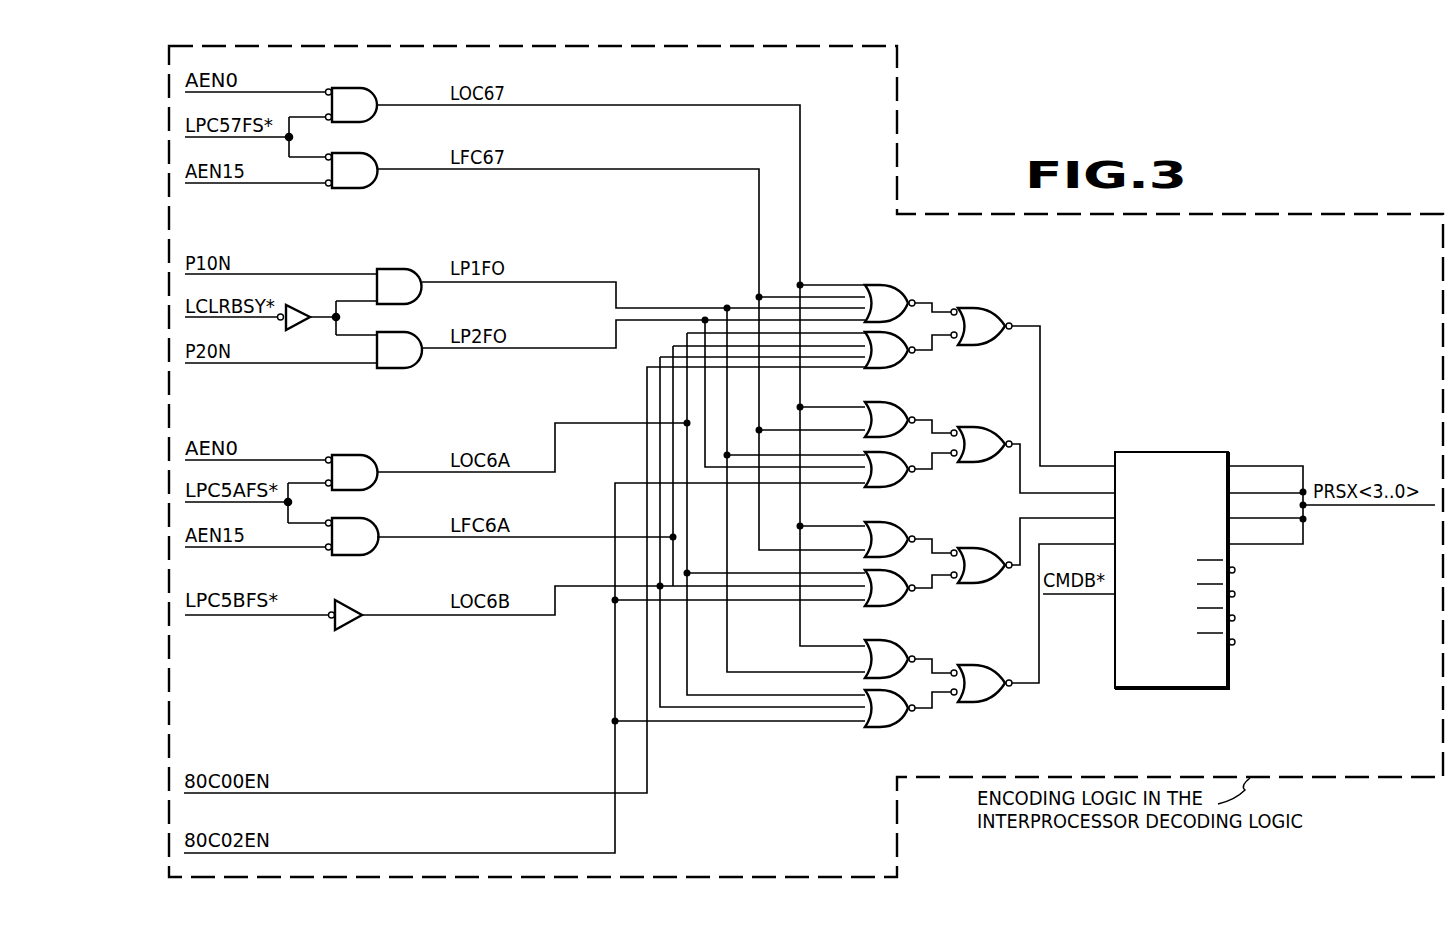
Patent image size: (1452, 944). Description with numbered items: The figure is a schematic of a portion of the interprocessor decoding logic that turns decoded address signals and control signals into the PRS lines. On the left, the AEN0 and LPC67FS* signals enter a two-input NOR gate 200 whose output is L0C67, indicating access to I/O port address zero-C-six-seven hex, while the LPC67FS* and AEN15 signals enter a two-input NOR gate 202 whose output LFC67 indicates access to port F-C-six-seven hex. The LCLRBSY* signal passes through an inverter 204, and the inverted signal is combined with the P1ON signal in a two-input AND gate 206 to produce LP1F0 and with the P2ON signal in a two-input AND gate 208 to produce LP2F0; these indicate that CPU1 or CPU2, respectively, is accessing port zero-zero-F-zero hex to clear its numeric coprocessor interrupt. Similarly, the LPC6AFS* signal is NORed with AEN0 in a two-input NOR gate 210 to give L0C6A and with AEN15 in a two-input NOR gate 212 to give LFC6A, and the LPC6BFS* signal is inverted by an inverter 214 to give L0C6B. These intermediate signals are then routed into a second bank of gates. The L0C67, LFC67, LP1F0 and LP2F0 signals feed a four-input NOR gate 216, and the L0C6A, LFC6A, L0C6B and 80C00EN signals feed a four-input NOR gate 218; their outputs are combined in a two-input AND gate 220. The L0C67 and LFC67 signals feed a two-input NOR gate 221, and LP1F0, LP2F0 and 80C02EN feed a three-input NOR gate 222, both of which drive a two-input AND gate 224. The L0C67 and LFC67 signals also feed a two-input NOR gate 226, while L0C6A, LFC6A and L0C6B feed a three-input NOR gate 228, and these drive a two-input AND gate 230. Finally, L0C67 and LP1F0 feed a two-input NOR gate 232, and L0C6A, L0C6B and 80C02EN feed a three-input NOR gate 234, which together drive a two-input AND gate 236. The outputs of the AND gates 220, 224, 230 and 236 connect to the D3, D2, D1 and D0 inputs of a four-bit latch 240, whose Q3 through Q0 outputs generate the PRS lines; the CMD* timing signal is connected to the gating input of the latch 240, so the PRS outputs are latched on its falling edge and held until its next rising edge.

The two-input NOR gate 200 is at (368, 84).
The two-input NOR gate 202 is at (376, 154).
The inverter 204 is at (299, 329).
The two-input AND gate 206 is at (404, 262).
The two-input AND gate 208 is at (418, 328).
The two-input NOR gate 210 is at (361, 449).
The two-input NOR gate 212 is at (371, 515).
The inverter 214 is at (356, 600).
The four-input NOR gate 216 is at (894, 280).
The four-input NOR gate 218 is at (905, 361).
The two-input AND gate 220 is at (989, 306).
The two-input NOR gate 221 is at (887, 401).
The three-input NOR gate 222 is at (900, 485).
The two-input AND gate 224 is at (976, 423).
The two-input NOR gate 226 is at (889, 521).
The three-input NOR gate 228 is at (893, 606).
The two-input AND gate 230 is at (972, 544).
The two-input NOR gate 232 is at (881, 640).
The three-input NOR gate 234 is at (884, 729).
The two-input AND gate 236 is at (976, 660).
The four-bit latch 240 is at (1178, 448).